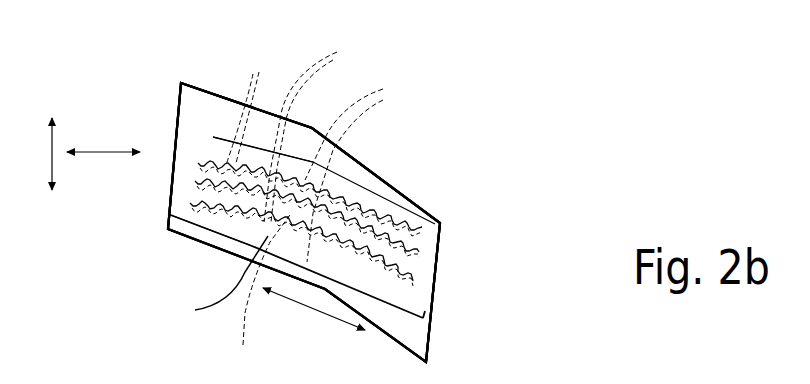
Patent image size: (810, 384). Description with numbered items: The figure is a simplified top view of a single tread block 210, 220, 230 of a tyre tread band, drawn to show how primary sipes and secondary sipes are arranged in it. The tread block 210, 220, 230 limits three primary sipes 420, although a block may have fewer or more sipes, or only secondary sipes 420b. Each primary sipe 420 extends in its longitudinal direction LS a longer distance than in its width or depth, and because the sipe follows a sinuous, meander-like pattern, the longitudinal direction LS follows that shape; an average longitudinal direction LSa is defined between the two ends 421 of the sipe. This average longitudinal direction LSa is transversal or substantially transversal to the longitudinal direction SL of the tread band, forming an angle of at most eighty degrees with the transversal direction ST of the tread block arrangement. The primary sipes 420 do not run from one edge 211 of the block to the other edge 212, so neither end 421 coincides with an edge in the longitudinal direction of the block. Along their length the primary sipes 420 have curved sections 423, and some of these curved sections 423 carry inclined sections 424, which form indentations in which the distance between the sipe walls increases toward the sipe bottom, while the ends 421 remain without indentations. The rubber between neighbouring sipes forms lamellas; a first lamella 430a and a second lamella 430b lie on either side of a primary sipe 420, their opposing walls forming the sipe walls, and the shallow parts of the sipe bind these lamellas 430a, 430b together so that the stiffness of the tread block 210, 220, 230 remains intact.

The tread block 210 is at (446, 128).
The tread block 220 is at (304, 222).
The tread block 230 is at (304, 222).
The edge of the tread block 211 is at (174, 84).
The other edge of the tread block 212 is at (438, 327).
The primary sipe 420 is at (406, 281).
The secondary sipe 420b is at (371, 170).
The end of the primary sipe 421 is at (200, 172).
The curved section 423 is at (251, 213).
The inclined section 424 is at (315, 232).
The first lamella 430a is at (210, 175).
The second lamella 430b is at (207, 200).
The longitudinal direction of the primary sipe LS is at (314, 319).
The average longitudinal direction LSa is at (209, 282).
The longitudinal direction of the tread band SL is at (32, 154).
The transversal direction of the tread block arrangement ST is at (103, 135).